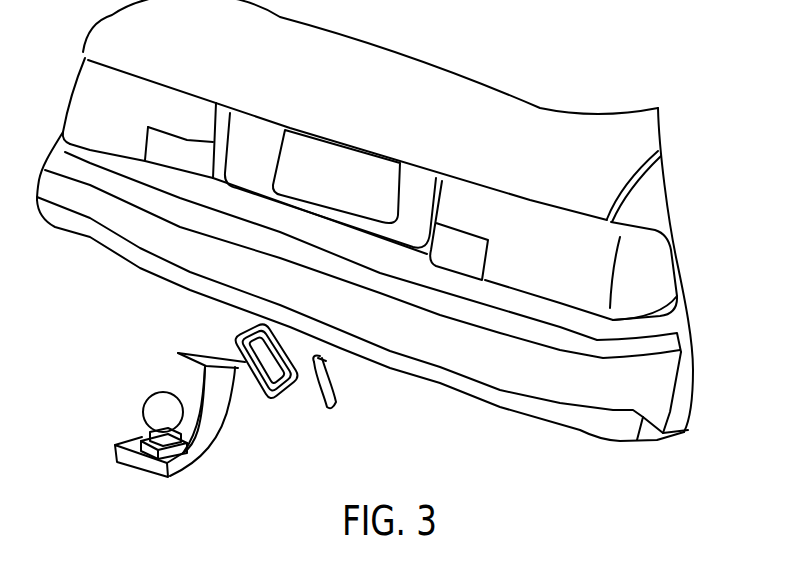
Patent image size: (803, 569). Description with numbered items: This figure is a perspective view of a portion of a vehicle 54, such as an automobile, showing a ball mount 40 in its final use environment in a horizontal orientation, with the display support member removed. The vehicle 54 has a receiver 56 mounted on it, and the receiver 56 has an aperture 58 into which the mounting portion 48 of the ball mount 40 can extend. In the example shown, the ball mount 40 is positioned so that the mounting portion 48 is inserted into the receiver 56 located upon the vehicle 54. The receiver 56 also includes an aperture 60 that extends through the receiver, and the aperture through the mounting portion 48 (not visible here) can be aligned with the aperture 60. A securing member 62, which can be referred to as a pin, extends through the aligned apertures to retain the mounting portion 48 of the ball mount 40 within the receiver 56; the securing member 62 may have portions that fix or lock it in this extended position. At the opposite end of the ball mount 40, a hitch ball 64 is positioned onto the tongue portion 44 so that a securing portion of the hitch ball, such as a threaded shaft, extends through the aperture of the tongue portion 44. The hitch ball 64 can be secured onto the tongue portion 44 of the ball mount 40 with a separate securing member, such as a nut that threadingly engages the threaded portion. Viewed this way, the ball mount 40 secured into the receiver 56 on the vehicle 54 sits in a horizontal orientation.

The vehicle 54 is at (446, 47).
The receiver 56 is at (288, 332).
The aperture 58 is at (247, 352).
The aperture 60 is at (326, 361).
The securing member 62 is at (333, 391).
The hitch ball 64 is at (158, 411).
The mounting portion 48 is at (205, 361).
The tongue portion 44 is at (148, 466).
The ball mount 40 is at (174, 440).